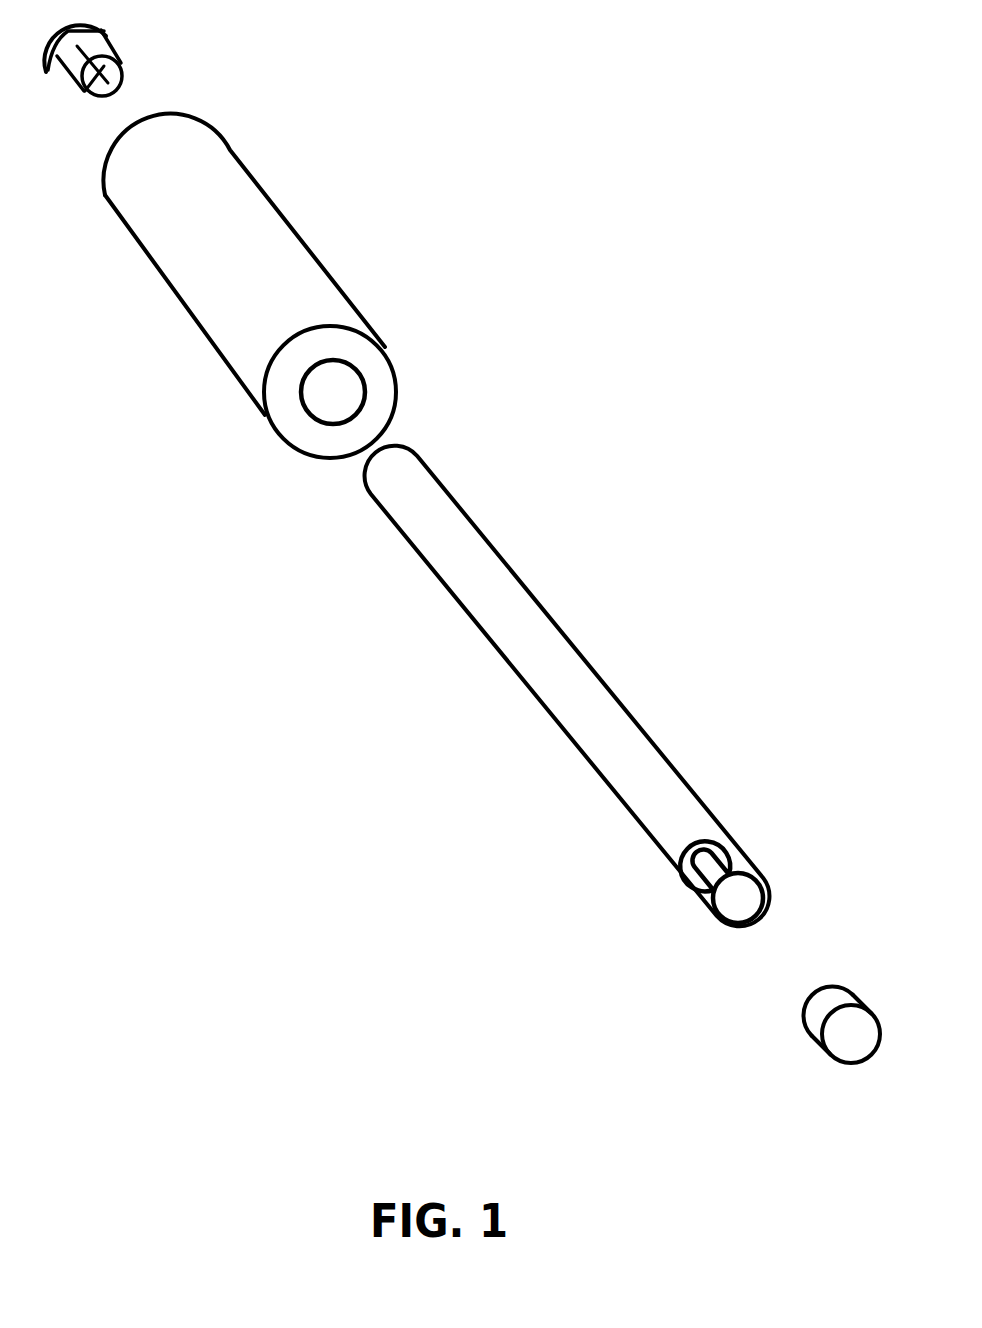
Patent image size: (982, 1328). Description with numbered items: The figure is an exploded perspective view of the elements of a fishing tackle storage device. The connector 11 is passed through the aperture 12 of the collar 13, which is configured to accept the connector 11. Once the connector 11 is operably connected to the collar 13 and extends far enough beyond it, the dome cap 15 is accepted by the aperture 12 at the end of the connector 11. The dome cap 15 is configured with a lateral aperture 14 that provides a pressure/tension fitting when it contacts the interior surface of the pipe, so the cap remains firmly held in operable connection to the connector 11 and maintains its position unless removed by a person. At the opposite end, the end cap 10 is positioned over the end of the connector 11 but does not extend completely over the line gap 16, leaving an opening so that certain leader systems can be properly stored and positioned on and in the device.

The end cap 10 is at (820, 1017).
The connector 11 is at (555, 673).
The aperture 12 is at (328, 376).
The collar 13 is at (248, 262).
The lateral aperture 14 is at (120, 72).
The dome cap 15 is at (64, 29).
The line gap 16 is at (700, 870).